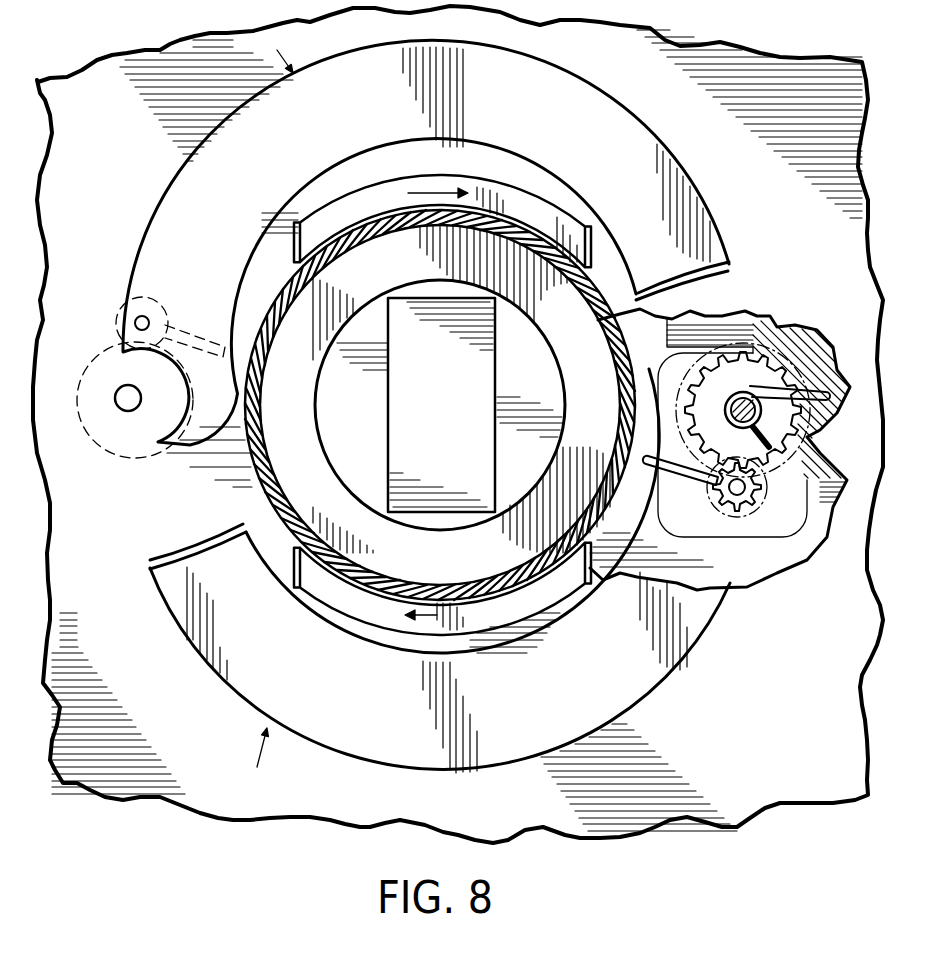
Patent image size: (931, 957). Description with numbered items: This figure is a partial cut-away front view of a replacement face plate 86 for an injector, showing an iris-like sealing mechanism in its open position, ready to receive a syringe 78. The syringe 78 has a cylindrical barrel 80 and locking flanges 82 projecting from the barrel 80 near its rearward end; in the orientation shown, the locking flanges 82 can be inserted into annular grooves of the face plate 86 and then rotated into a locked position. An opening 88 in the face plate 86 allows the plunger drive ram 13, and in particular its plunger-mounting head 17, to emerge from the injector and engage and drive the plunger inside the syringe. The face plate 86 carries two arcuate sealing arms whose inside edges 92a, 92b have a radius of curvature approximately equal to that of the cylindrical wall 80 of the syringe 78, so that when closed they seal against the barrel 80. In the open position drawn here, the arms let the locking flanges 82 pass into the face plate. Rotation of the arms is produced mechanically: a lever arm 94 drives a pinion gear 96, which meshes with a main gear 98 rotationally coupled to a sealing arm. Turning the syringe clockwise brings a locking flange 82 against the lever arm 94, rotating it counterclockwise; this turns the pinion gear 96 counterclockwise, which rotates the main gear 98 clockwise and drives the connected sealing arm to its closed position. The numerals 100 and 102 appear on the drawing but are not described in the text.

The plunger drive ram 13 is at (359, 436).
The plunger-mounting head 17 is at (449, 443).
The syringe 78 is at (270, 453).
The cylindrical barrel 80 is at (410, 582).
The locking flanges 82 is at (523, 200).
The replacement face plate 86 is at (458, 424).
The opening 88 is at (461, 389).
The inside edge of sealing arm 92a is at (447, 152).
The inside edge of sealing arm 92b is at (460, 658).
The lever arm 94 is at (657, 478).
The pinion gear 96 is at (752, 507).
The main gear 98 is at (777, 449).
The ratchet wheel 100 is at (745, 392).
The housing 102 is at (822, 342).